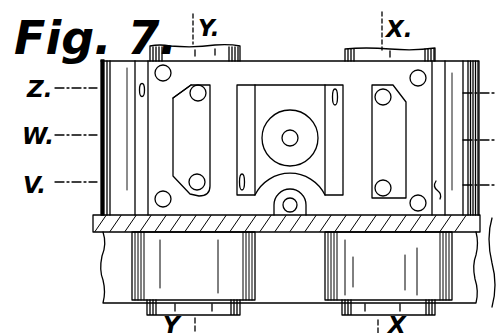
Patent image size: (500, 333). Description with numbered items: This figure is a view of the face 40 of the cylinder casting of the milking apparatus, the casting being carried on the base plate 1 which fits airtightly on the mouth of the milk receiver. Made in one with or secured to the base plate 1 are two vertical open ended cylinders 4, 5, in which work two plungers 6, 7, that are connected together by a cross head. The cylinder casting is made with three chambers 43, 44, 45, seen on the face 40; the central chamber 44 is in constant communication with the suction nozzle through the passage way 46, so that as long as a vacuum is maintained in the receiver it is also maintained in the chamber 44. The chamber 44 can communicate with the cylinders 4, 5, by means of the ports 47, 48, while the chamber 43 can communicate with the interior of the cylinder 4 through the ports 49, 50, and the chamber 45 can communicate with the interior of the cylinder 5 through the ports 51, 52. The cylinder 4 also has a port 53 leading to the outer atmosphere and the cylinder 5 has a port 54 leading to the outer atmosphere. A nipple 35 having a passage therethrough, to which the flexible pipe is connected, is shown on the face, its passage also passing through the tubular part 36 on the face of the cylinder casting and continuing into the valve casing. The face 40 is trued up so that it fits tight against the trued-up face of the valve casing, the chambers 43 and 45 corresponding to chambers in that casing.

The base plate 1 is at (93, 220).
The cylinder 4 is at (493, 62).
The cylinder 5 is at (388, 273).
The plunger 6 is at (190, 47).
The plunger 7 is at (432, 50).
The nipple 35 is at (297, 138).
The tubular part 36 is at (290, 114).
The face of the cylinder casting 40 is at (276, 140).
The chamber 43 is at (191, 140).
The central chamber 44 is at (290, 140).
The chamber 45 is at (389, 141).
The passage way 46 is at (291, 210).
The port 47 is at (241, 189).
The port 48 is at (335, 90).
The port 49 is at (204, 86).
The port 50 is at (189, 184).
The port 51 is at (383, 90).
The port 52 is at (387, 185).
The port 53 is at (139, 91).
The port 54 is at (452, 201).